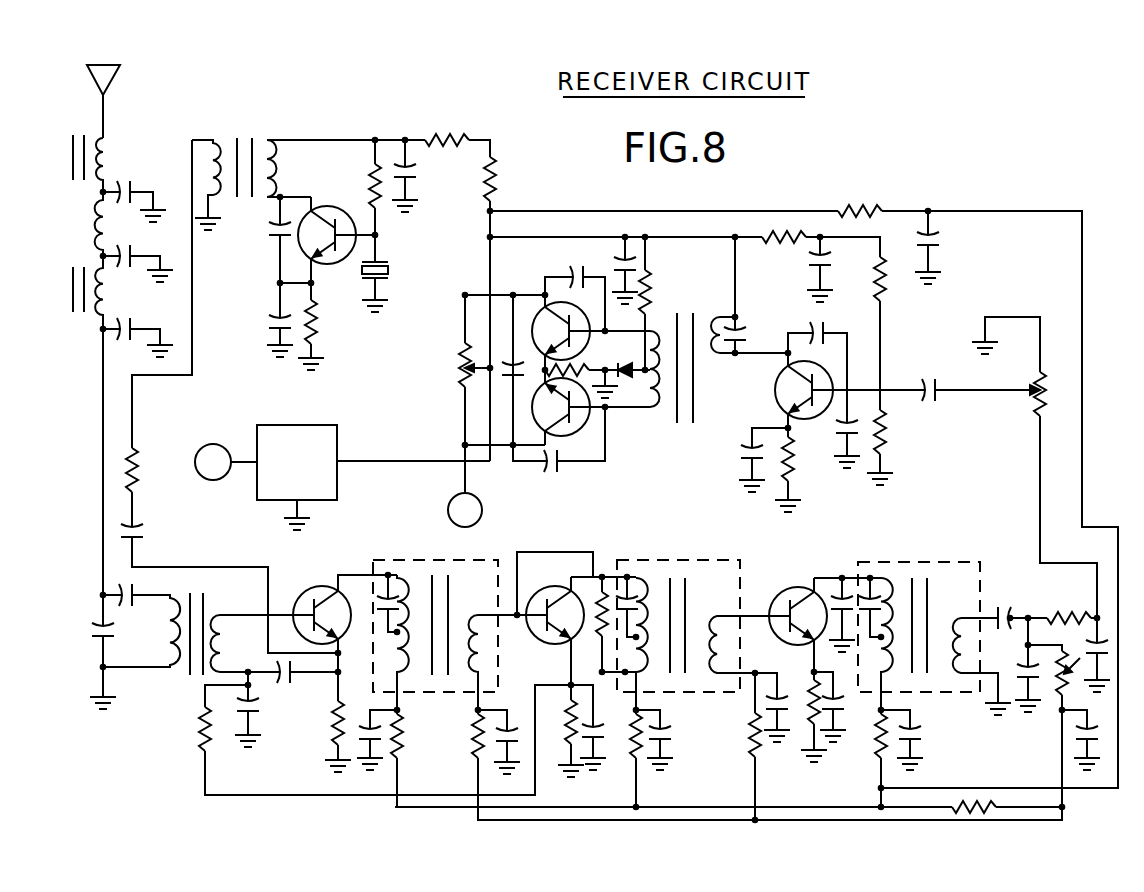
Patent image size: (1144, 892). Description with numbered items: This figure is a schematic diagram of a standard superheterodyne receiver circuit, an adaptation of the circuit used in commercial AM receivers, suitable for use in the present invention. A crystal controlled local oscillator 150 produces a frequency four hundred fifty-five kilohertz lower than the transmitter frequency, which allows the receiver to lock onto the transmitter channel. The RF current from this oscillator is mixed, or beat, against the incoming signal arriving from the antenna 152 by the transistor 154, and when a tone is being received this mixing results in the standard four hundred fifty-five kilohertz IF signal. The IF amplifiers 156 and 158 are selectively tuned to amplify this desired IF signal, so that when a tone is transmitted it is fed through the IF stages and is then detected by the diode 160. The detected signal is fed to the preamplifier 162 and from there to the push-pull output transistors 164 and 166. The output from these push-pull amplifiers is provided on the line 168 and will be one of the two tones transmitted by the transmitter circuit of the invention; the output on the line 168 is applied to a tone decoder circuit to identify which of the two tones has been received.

The crystal controlled local oscillator 150 is at (335, 206).
The antenna 152 is at (115, 88).
The transistor 154 is at (311, 588).
The IF amplifier 156 is at (537, 596).
The IF amplifier 158 is at (787, 588).
The diode 160 is at (1008, 612).
The preamplifier 162 is at (770, 398).
The push-pull output transistor 164 is at (543, 303).
The push-pull output transistor 166 is at (578, 430).
The line 168 is at (463, 478).